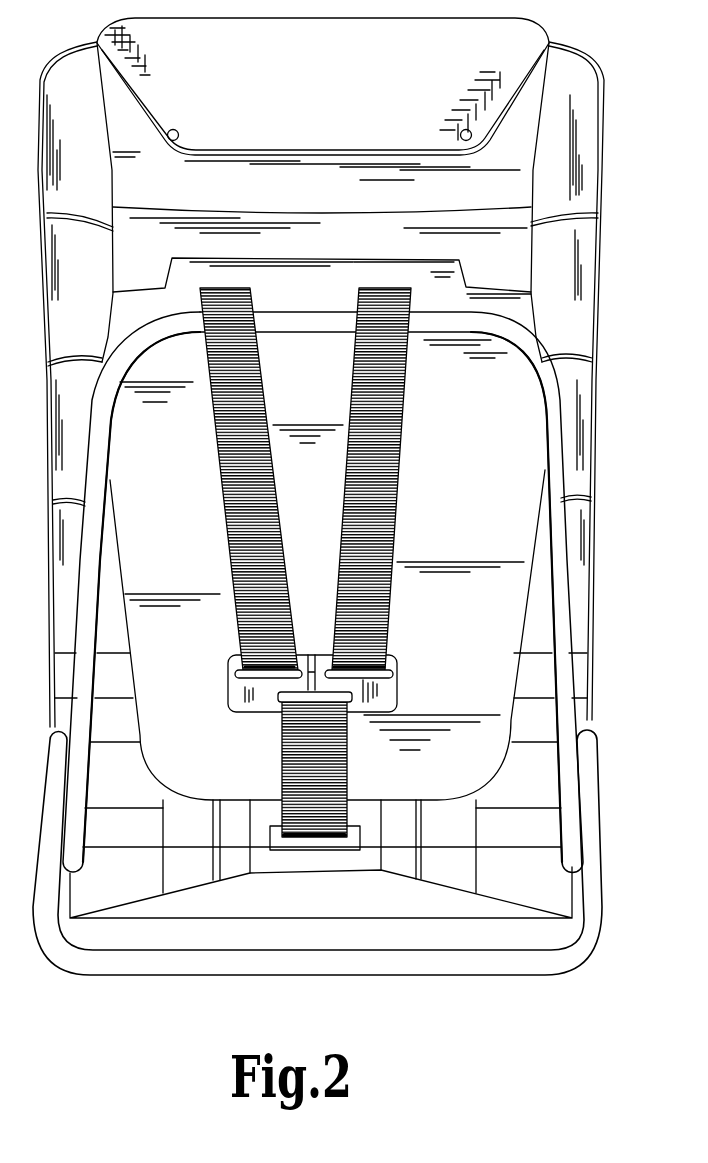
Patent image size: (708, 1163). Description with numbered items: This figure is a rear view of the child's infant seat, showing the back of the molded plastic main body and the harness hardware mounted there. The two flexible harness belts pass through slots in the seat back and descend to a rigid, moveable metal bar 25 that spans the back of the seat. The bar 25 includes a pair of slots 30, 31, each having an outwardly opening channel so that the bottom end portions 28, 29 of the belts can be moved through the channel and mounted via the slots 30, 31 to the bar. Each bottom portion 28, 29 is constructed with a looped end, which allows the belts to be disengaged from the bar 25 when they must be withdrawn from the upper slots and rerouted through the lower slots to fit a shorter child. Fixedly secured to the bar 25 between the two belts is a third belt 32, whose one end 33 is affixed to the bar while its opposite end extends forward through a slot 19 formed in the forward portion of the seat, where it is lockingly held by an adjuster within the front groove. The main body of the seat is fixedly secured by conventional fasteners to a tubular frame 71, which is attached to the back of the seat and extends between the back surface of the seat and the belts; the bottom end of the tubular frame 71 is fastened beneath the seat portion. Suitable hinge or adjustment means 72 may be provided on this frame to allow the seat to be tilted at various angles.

The slot 19 is at (358, 826).
The moveable bar 25 is at (312, 665).
The bottom end portion 28 is at (250, 442).
The bottom end portion 29 is at (376, 466).
The slot 30 is at (229, 675).
The slot 31 is at (397, 674).
The third belt 32 is at (317, 852).
The end 33 is at (298, 752).
The tubular frame 71 is at (552, 598).
The hinge or adjustment means 72 is at (589, 813).